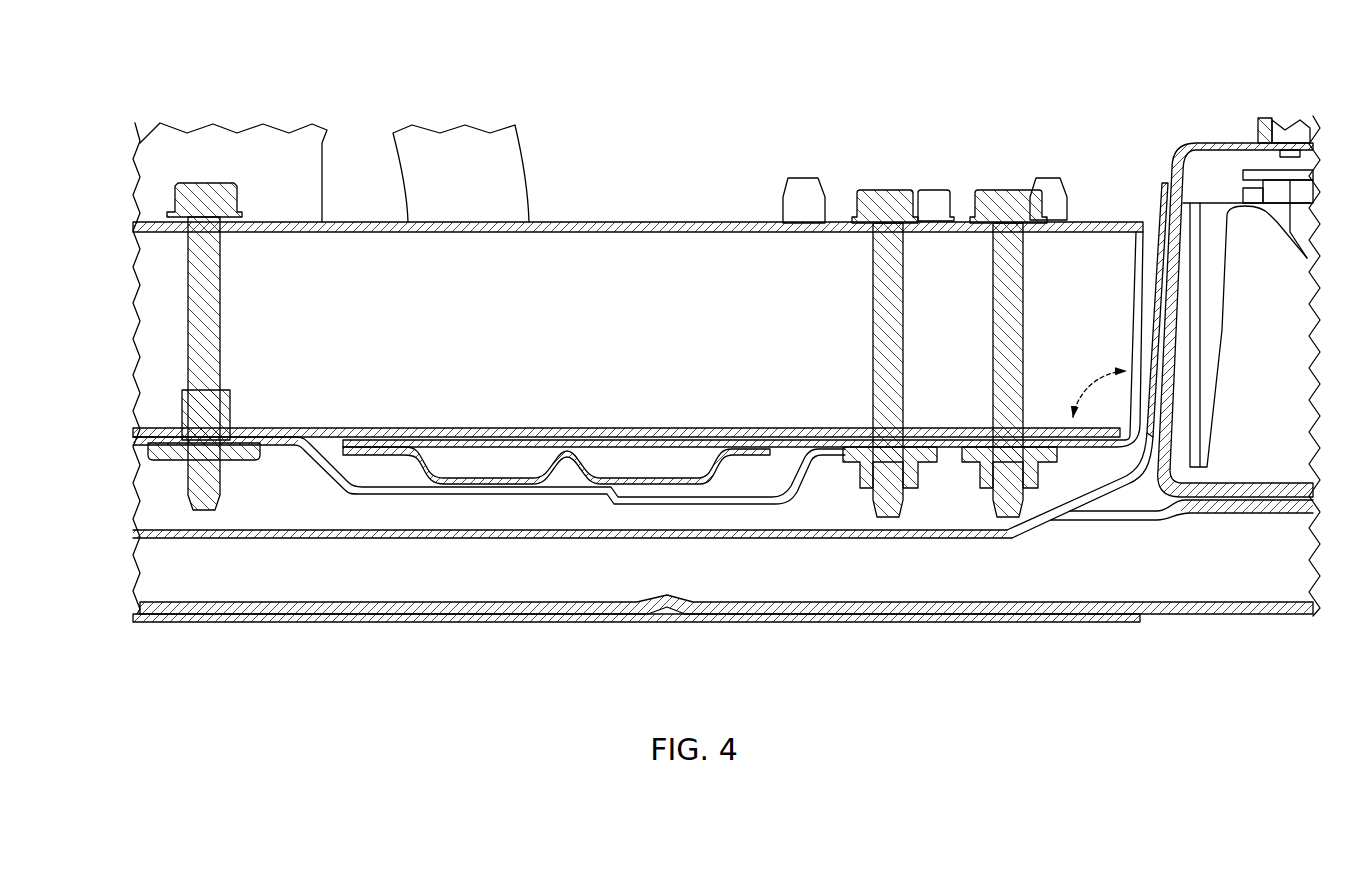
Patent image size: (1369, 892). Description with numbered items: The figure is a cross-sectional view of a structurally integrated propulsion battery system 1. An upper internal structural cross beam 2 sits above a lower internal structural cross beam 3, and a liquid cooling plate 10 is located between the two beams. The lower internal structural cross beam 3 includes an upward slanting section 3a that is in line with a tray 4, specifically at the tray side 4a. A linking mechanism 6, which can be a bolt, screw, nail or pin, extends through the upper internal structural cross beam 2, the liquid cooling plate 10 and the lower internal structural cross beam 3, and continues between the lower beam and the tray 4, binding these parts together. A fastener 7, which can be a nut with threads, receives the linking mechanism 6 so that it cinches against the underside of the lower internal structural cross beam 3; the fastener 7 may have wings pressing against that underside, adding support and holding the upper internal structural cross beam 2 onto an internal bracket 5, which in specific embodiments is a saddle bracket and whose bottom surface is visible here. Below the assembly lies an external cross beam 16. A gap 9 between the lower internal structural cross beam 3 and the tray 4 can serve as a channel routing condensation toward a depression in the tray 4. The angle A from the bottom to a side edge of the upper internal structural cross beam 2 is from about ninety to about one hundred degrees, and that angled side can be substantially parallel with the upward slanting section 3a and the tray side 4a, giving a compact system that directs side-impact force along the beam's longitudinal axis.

The structurally integrated propulsion battery system 1 is at (343, 88).
The upper internal structural cross beam 2 is at (660, 262).
The lower internal structural cross beam 3 is at (320, 461).
The upward slanting section 3a is at (1156, 170).
The tray 4 is at (851, 538).
The tray side 4a is at (1176, 291).
The internal bracket 5 is at (948, 435).
The linking mechanism 6 is at (878, 322).
The fastener 7 is at (1035, 484).
The gap 9 is at (631, 520).
The liquid cooling plate 10 is at (484, 455).
The external cross beam 16 is at (782, 585).
The angle A is at (1088, 392).